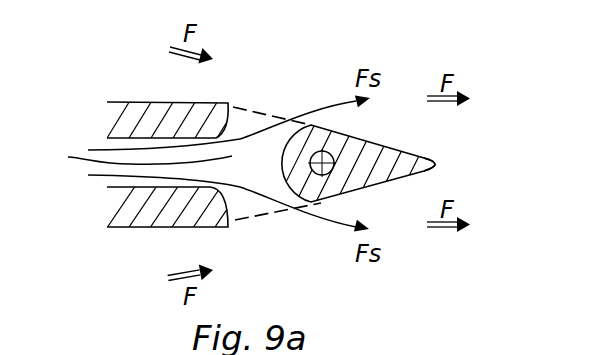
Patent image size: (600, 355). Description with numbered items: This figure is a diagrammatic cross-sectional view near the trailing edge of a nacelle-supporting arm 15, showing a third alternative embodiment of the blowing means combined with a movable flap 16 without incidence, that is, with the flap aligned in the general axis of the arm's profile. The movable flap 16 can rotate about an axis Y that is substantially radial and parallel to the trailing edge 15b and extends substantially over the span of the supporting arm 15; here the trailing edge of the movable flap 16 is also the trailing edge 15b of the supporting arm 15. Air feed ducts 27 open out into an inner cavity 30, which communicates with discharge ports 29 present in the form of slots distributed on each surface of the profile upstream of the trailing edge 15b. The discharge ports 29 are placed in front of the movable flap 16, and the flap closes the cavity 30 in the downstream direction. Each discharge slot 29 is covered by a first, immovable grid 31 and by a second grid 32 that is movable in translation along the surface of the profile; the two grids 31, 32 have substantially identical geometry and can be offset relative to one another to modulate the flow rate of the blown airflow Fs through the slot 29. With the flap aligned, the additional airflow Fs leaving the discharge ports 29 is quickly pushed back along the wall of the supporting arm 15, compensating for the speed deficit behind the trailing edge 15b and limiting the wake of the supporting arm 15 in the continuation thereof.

The supporting arm 15 is at (143, 118).
The trailing edge 15b is at (436, 161).
The movable flap 16 is at (377, 156).
The air feed duct 27 is at (137, 180).
The discharge port 29 is at (290, 83).
The inner cavity 30 is at (138, 163).
The first grid 31 is at (244, 107).
The second grid 32 is at (255, 112).
The axis Y is at (335, 167).